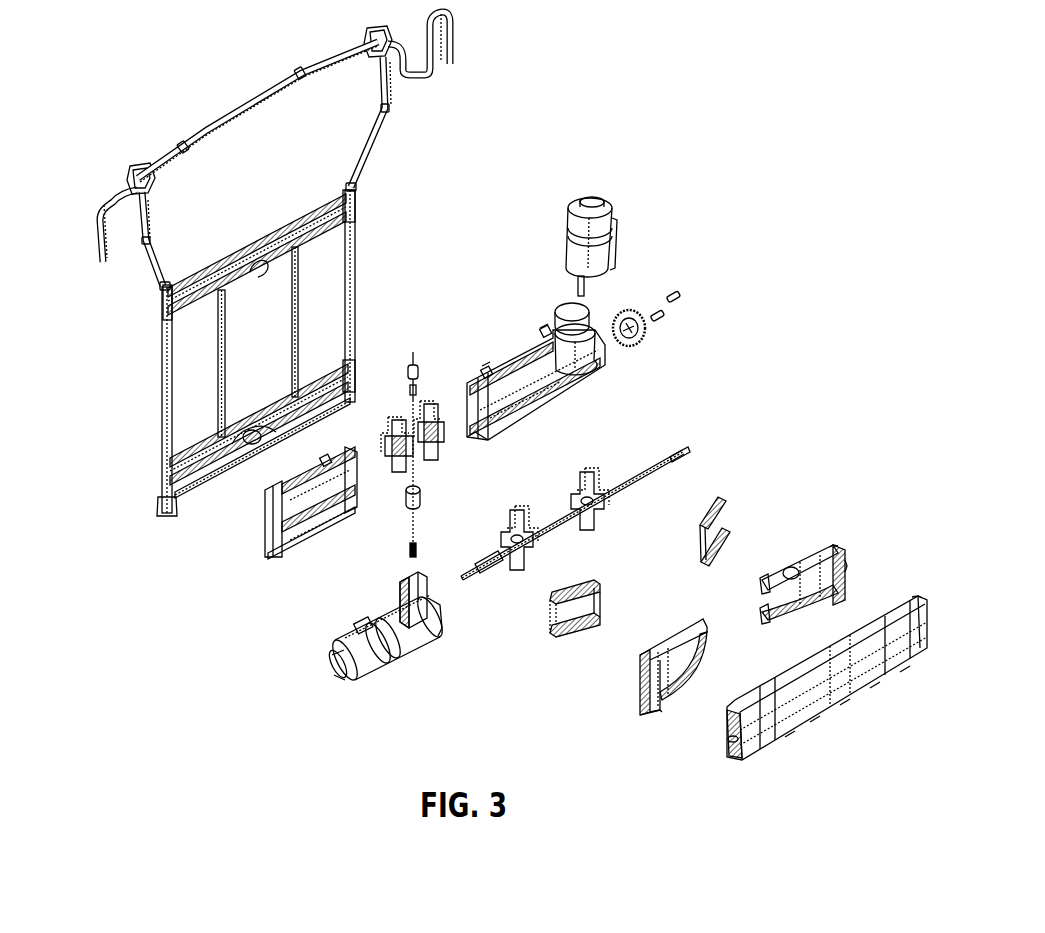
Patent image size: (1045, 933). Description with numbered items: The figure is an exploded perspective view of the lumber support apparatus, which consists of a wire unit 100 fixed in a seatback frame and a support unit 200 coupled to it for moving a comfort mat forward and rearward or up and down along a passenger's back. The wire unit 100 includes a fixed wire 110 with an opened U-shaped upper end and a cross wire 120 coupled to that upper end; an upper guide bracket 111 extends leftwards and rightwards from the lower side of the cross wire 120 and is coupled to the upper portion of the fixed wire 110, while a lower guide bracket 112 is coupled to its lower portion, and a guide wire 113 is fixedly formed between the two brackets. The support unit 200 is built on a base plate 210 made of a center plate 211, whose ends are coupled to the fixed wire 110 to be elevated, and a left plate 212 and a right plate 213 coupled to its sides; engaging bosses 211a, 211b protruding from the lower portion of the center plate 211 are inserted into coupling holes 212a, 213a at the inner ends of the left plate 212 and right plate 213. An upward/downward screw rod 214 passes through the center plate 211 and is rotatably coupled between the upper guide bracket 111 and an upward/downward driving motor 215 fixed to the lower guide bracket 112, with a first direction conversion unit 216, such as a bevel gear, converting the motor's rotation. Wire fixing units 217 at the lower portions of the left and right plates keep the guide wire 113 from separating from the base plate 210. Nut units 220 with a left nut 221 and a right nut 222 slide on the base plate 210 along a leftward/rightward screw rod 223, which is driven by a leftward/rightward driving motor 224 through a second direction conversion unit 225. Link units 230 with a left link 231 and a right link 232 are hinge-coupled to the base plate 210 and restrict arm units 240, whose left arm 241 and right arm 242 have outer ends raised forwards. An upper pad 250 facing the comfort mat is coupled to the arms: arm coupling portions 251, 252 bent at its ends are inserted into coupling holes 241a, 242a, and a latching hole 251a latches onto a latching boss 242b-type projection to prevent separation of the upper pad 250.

The wire unit 100 is at (113, 278).
The fixed wire 110 is at (373, 140).
The upper guide bracket 111 is at (285, 240).
The lower guide bracket 112 is at (311, 372).
The guide wire 113 is at (293, 290).
The cross wire 120 is at (244, 100).
The support unit 200 is at (733, 341).
The base plate 210 is at (431, 510).
The center plate 211 is at (436, 456).
The engaging boss 211a is at (393, 479).
The engaging boss 211b is at (433, 403).
The left plate 212 is at (268, 557).
The coupling hole 212a is at (355, 521).
The right plate 213 is at (548, 413).
The coupling hole 213a is at (488, 433).
The upward/downward screw rod 214 is at (413, 352).
The upward/downward driving motor 215 is at (393, 666).
The first direction conversion unit 216 is at (404, 597).
The wire fixing unit 217 is at (543, 328).
The nut unit 220 is at (592, 525).
The left nut 221 is at (516, 572).
The right nut 222 is at (598, 519).
The leftward/rightward screw rod 223 is at (681, 446).
The leftward/rightward driving motor 224 is at (579, 200).
The second direction conversion unit 225 is at (590, 309).
The link unit 230 is at (676, 608).
The left link 231 is at (566, 627).
The right link 232 is at (731, 513).
The arm unit 240 is at (779, 634).
The left arm 241 is at (663, 638).
The coupling hole 241a is at (660, 719).
The right arm 242 is at (848, 588).
The coupling hole 242a is at (844, 548).
The latching boss 242b is at (848, 566).
The upper pad 250 is at (870, 690).
The arm coupling portion 251 is at (735, 706).
The latching hole 251a is at (727, 741).
The arm coupling portion 252 is at (906, 598).